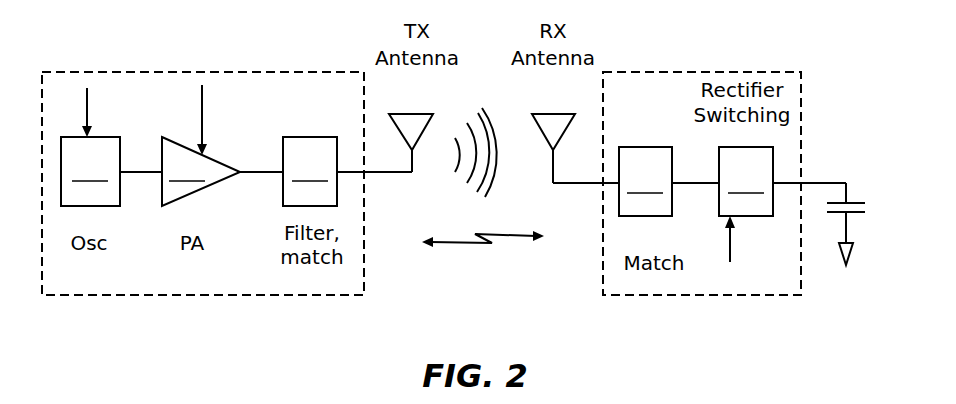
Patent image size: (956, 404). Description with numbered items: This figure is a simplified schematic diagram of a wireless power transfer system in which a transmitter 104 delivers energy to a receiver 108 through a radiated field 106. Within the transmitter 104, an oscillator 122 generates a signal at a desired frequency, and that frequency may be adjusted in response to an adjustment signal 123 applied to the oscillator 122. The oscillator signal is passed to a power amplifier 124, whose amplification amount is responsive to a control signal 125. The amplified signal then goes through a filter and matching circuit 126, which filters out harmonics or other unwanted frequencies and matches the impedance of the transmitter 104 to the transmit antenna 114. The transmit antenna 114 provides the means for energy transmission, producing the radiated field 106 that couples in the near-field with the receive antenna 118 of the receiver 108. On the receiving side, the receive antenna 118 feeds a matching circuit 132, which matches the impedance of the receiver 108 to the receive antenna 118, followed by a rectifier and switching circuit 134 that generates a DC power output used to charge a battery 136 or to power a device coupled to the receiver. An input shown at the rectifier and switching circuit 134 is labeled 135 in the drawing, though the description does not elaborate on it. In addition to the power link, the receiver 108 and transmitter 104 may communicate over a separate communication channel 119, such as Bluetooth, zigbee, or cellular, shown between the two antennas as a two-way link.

The transmitter 104 is at (188, 72).
The radiated field 106 is at (485, 196).
The receiver 108 is at (702, 72).
The transmit antenna 114 is at (407, 114).
The receive antenna 118 is at (562, 114).
The communication channel 119 is at (490, 244).
The oscillator 122 is at (90, 171).
The adjustment signal 123 is at (89, 113).
The power amplifier 124 is at (201, 171).
The control signal 125 is at (204, 113).
The filter and matching circuit 126 is at (310, 171).
The matching circuit 132 is at (645, 181).
The rectifier and switching circuit 134 is at (746, 181).
The rectifier switching control input 135 is at (731, 243).
The battery 136 is at (853, 203).